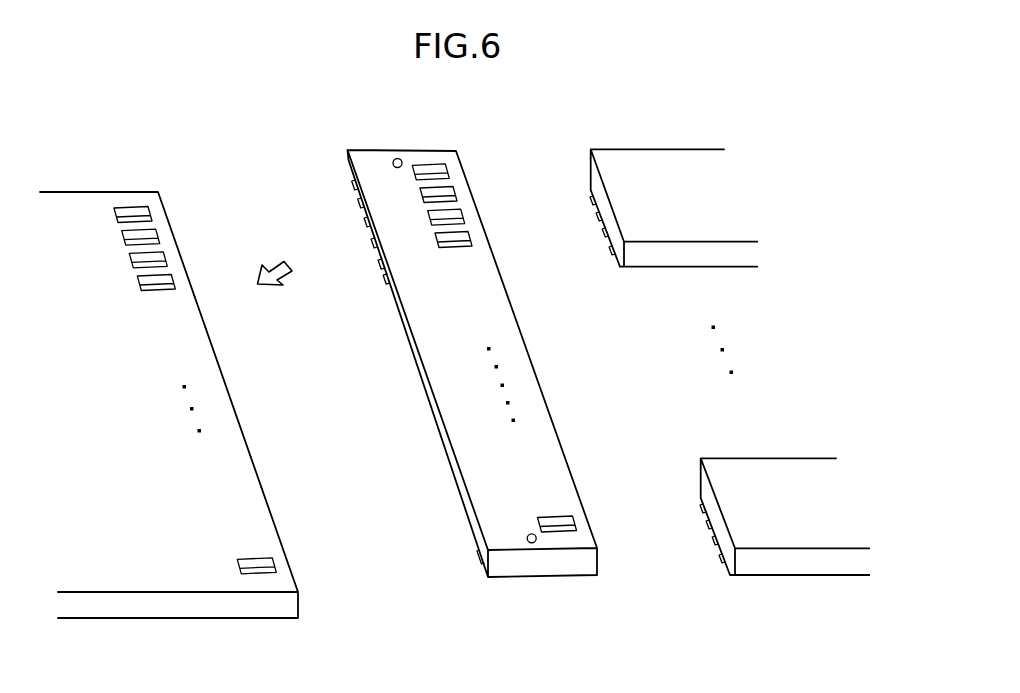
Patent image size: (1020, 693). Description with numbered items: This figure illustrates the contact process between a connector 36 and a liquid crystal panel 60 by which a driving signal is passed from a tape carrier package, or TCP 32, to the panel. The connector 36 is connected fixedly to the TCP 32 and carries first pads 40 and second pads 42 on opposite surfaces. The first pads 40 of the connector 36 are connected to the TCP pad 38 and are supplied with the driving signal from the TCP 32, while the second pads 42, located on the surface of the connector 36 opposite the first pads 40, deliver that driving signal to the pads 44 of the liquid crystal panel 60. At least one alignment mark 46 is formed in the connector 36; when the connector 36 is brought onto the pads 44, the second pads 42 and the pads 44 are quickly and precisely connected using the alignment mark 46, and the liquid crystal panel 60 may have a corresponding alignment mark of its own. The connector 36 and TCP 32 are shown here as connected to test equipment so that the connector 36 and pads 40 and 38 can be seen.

The TCP 32 is at (672, 150).
The connector 36 is at (534, 374).
The TCP pad 38 is at (591, 192).
The first pad 40 is at (432, 170).
The second pad 42 is at (352, 199).
The pads of the liquid crystal panel 44 is at (173, 279).
The alignment mark 46 is at (532, 544).
The liquid crystal panel 60 is at (256, 604).